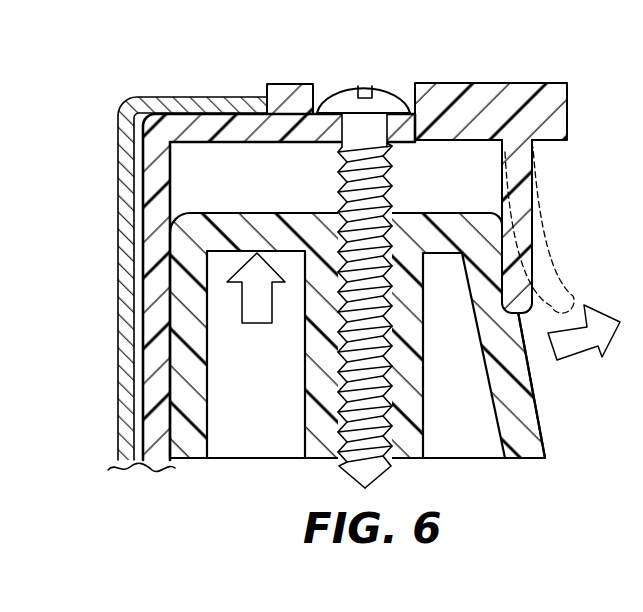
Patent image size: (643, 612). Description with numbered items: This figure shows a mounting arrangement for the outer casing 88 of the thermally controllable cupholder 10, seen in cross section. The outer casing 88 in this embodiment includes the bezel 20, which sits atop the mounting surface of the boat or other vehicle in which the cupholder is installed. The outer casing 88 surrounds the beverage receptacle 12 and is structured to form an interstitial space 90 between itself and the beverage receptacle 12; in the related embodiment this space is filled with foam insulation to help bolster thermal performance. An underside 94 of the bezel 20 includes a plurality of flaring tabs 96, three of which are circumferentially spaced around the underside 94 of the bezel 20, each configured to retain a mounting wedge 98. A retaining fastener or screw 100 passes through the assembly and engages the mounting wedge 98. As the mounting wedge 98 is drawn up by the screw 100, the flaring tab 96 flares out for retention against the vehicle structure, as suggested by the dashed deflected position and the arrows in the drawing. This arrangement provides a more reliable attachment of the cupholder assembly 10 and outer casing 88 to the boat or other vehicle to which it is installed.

The thermally controllable cupholder 10 is at (160, 97).
The beverage receptacle 12 is at (203, 93).
The bezel 20 is at (462, 82).
The outer casing 88 is at (288, 82).
The interstitial space 90 is at (140, 466).
The underside of the bezel 94 is at (403, 140).
The flaring tab 96 is at (523, 158).
The mounting wedge 98 is at (532, 400).
The retaining fastener or screw 100 is at (377, 83).